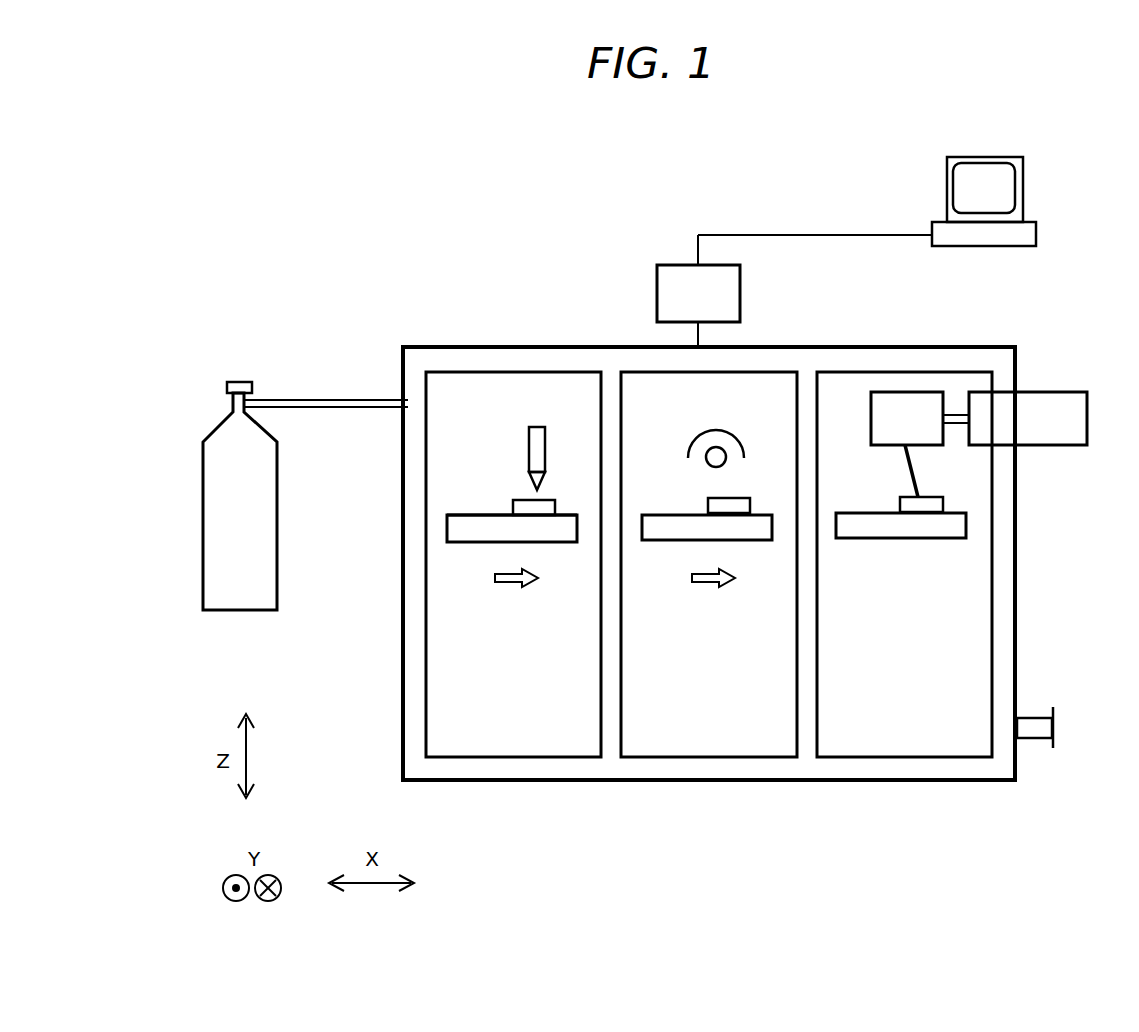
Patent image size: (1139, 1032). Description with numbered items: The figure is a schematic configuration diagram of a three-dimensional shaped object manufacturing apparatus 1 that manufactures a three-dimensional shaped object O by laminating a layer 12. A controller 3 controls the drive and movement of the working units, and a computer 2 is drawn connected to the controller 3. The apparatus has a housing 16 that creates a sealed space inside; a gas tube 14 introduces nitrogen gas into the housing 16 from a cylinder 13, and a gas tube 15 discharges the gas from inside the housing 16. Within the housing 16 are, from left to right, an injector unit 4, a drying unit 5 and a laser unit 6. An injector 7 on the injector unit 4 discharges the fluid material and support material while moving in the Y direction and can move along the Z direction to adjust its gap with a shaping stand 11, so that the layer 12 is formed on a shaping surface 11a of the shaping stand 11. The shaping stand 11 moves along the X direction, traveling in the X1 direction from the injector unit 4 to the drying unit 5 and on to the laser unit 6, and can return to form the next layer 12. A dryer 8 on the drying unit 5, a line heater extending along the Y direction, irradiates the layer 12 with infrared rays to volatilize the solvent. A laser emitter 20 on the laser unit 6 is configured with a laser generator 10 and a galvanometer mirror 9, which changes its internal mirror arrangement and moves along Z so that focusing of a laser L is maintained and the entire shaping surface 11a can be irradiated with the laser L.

The three-dimensional shaped object manufacturing apparatus 1 is at (1056, 330).
The computer 2 is at (1046, 163).
The controller 3 is at (677, 264).
The injector unit 4 is at (467, 372).
The drying unit 5 is at (650, 372).
The laser unit 6 is at (850, 372).
The injector 7 is at (537, 427).
The dryer 8 is at (717, 430).
The galvanometer mirror 9 is at (914, 392).
The laser generator 10 is at (1028, 369).
The shaping stand 11 is at (450, 527).
The shaping surface 11a is at (575, 512).
The layer 12 is at (513, 504).
The cylinder 13 is at (215, 433).
The gas tube 14 is at (372, 399).
The gas tube 15 is at (1028, 715).
The housing 16 is at (1017, 563).
The laser emitter 20 is at (979, 348).
The laser L is at (917, 470).